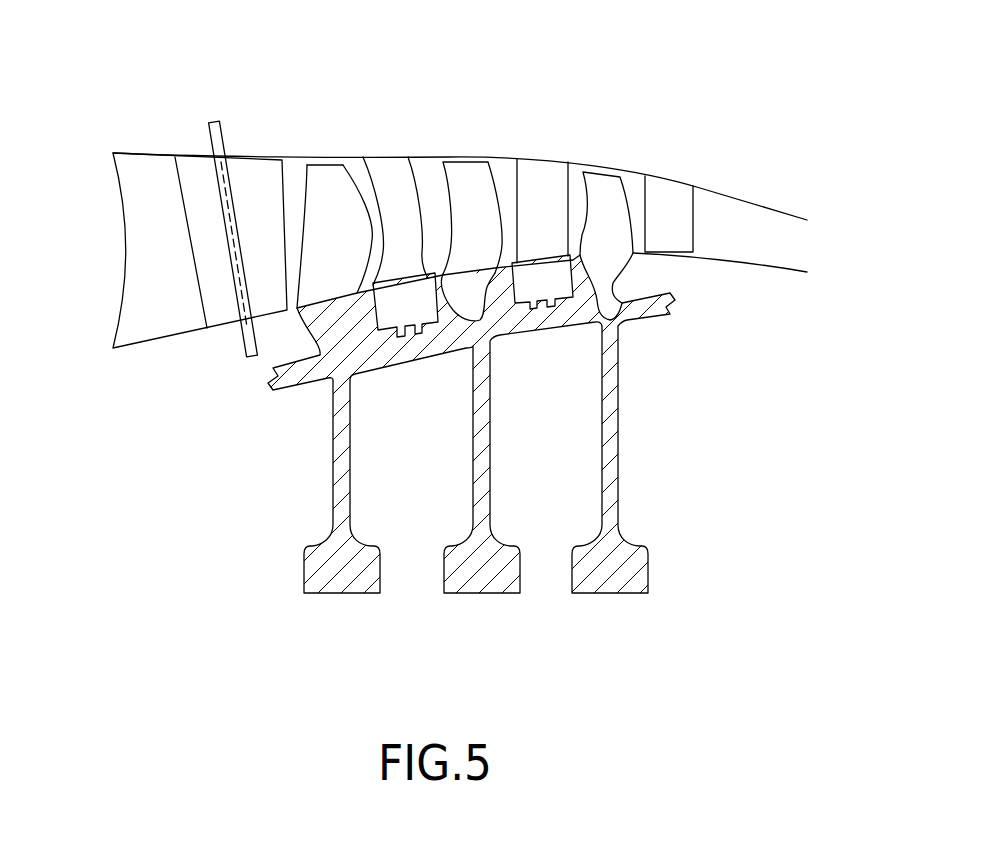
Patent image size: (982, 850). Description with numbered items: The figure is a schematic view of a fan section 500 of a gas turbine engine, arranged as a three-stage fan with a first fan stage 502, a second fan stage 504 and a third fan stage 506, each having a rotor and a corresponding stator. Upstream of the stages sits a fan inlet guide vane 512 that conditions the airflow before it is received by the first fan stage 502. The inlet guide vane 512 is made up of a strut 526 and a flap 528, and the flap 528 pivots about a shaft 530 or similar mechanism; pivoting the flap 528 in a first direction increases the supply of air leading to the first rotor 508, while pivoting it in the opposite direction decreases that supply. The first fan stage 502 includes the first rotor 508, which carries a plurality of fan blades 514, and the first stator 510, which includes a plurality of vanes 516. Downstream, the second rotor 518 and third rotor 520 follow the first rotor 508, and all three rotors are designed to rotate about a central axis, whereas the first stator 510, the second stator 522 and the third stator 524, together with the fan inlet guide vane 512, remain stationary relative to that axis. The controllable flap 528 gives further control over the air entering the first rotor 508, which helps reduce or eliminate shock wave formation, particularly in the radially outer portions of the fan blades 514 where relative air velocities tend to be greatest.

The fan section 500 is at (105, 80).
The first fan stage 502 is at (366, 126).
The second fan stage 504 is at (511, 121).
The third fan stage 506 is at (650, 135).
The first rotor 508 is at (323, 177).
The first stator 510 is at (397, 165).
The fan inlet guide vane 512 is at (201, 100).
The fan blades 514 is at (350, 257).
The vanes 516 is at (424, 266).
The second rotor 518 is at (475, 167).
The third rotor 520 is at (608, 187).
The second stator 522 is at (540, 173).
The third stator 524 is at (680, 192).
The strut 526 is at (203, 220).
The flap 528 is at (260, 260).
The shaft 530 is at (220, 137).